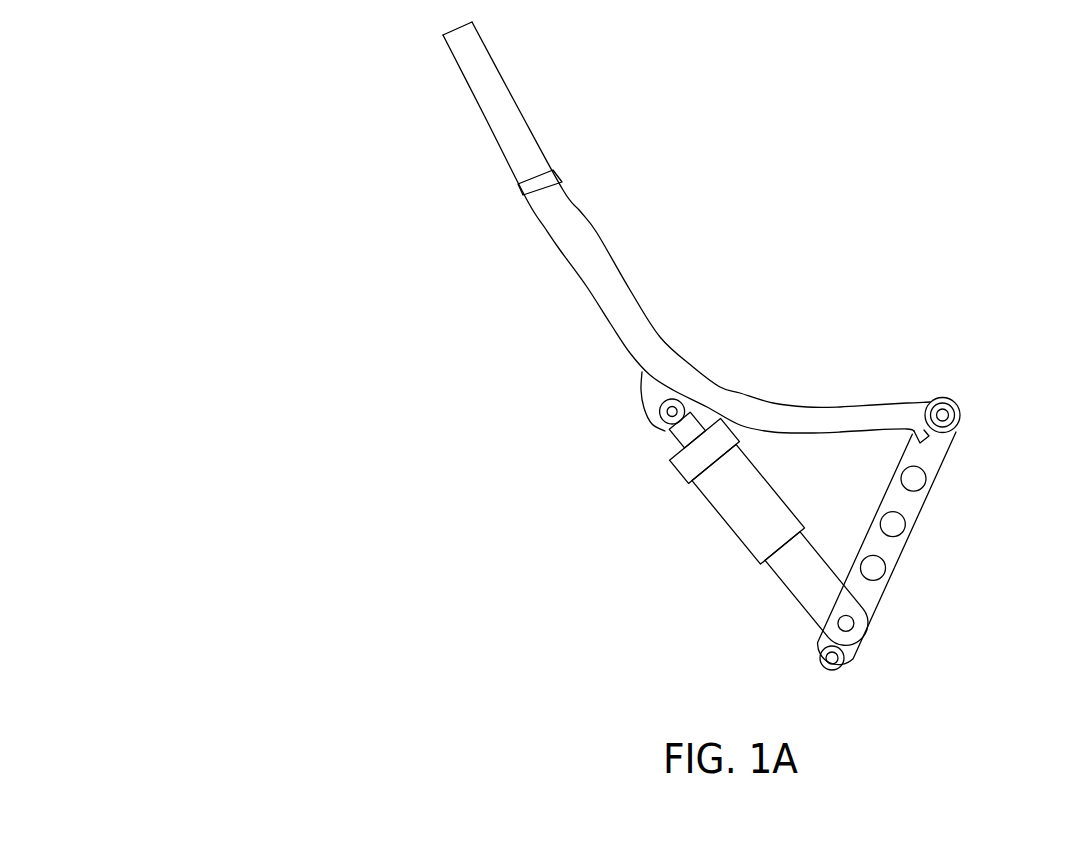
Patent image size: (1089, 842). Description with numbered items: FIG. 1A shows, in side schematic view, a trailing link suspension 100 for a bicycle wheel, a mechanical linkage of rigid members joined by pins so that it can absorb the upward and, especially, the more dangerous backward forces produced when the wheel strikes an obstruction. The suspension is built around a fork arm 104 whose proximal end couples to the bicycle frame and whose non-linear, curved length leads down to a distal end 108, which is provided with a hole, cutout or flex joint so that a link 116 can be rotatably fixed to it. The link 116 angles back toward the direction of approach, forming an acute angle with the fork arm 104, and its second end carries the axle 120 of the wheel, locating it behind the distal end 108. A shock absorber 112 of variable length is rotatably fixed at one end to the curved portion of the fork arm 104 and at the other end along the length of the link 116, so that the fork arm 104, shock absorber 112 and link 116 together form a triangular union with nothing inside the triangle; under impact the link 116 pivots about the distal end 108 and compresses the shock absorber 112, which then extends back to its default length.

The trailing link suspension 100 is at (130, 122).
The fork arm 104 is at (525, 158).
The distal end 108 is at (958, 405).
The shock absorber 112 is at (743, 525).
The link 116 is at (891, 563).
The axle 120 is at (815, 661).